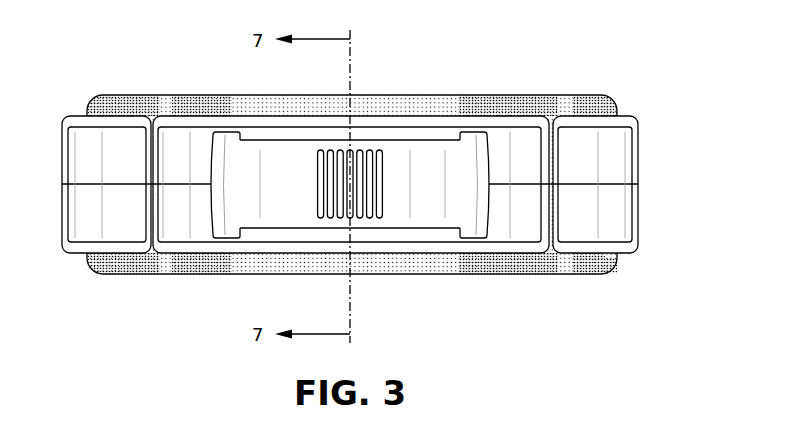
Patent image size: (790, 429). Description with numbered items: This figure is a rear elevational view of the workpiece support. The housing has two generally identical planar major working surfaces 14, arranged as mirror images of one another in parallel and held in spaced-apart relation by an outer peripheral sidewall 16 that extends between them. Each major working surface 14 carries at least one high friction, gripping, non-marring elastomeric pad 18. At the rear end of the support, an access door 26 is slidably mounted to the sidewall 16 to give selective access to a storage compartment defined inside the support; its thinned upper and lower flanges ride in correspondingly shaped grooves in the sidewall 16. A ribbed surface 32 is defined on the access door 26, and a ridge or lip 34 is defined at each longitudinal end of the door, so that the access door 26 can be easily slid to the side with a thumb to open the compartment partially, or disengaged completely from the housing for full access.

The major working surface 14 is at (625, 116).
The outer peripheral sidewall 16 is at (620, 165).
The elastomeric pad 18 is at (550, 124).
The access door 26 is at (460, 200).
The ribbed surface 32 is at (372, 193).
The ridge or lip 34 is at (477, 147).